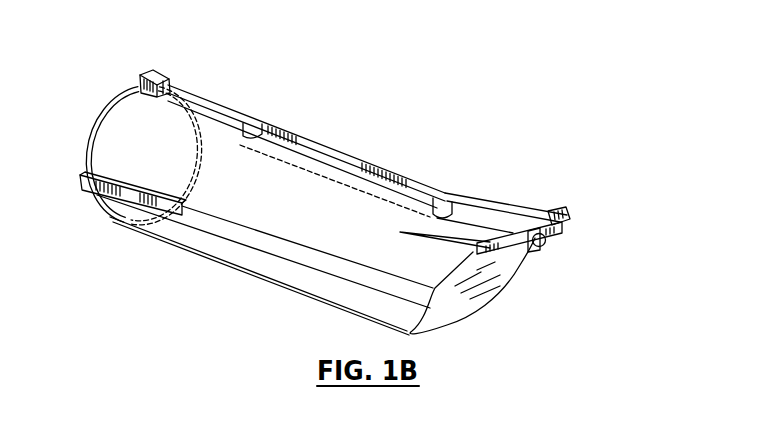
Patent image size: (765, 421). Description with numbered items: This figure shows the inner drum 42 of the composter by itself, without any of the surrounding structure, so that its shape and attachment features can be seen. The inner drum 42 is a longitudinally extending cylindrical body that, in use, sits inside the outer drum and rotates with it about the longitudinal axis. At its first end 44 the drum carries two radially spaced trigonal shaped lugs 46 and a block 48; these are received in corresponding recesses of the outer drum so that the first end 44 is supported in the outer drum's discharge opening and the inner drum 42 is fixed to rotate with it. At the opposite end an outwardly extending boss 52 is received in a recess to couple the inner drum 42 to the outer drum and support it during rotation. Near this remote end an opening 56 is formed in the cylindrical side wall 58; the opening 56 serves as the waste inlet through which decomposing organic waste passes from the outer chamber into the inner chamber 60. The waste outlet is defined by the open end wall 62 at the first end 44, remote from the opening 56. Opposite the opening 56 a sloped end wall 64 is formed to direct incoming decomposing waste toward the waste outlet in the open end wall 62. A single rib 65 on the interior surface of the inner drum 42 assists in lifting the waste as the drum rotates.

The inner drum 42 is at (256, 96).
The first end 44 is at (88, 123).
The trigonal shaped lugs 46 is at (77, 175).
The block 48 is at (155, 72).
The outwardly extending boss 52 is at (522, 247).
The opening 56 is at (483, 213).
The cylindrical side wall 58 is at (258, 270).
The inner chamber 60 is at (292, 211).
The open end wall 62 is at (103, 138).
The sloped end wall 64 is at (453, 306).
The rib 65 is at (312, 150).